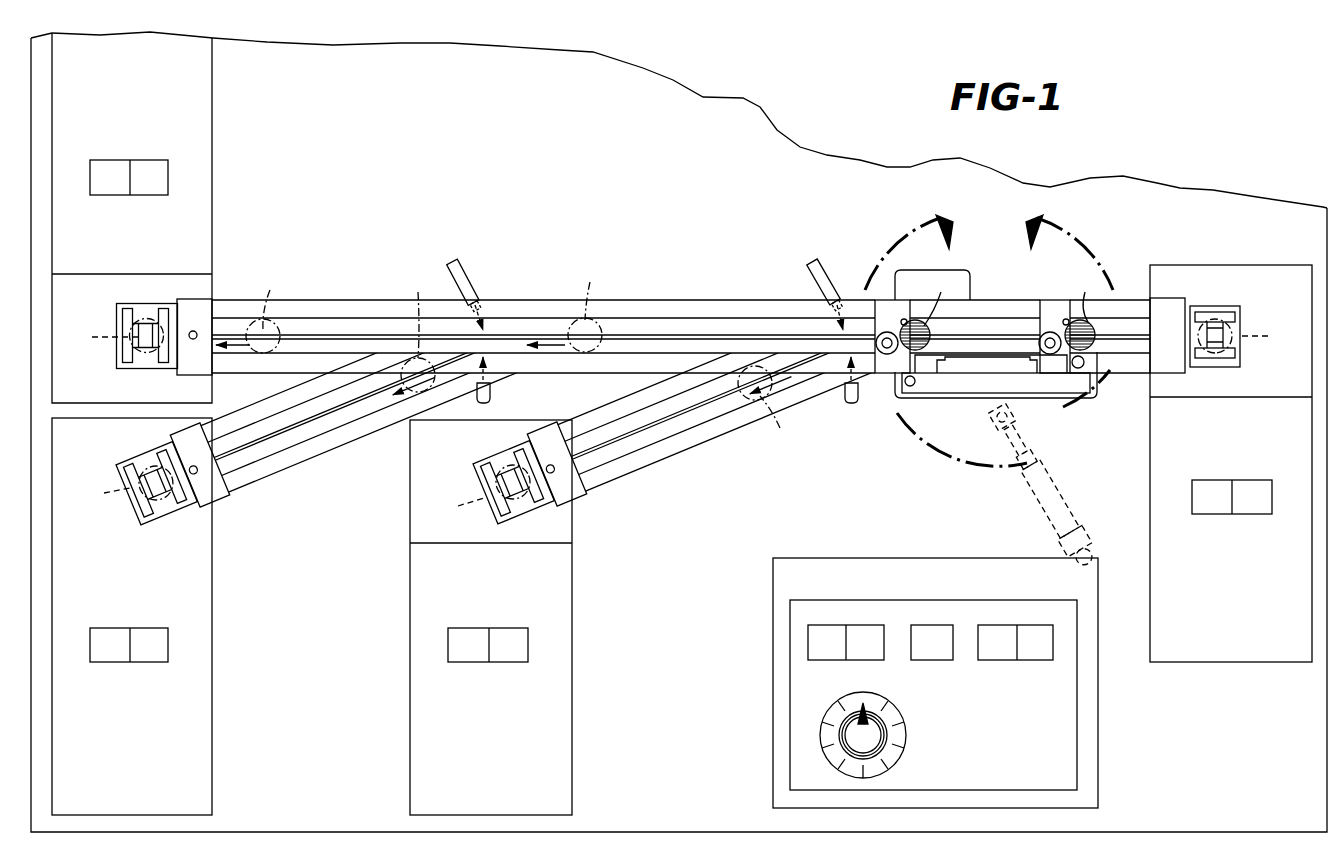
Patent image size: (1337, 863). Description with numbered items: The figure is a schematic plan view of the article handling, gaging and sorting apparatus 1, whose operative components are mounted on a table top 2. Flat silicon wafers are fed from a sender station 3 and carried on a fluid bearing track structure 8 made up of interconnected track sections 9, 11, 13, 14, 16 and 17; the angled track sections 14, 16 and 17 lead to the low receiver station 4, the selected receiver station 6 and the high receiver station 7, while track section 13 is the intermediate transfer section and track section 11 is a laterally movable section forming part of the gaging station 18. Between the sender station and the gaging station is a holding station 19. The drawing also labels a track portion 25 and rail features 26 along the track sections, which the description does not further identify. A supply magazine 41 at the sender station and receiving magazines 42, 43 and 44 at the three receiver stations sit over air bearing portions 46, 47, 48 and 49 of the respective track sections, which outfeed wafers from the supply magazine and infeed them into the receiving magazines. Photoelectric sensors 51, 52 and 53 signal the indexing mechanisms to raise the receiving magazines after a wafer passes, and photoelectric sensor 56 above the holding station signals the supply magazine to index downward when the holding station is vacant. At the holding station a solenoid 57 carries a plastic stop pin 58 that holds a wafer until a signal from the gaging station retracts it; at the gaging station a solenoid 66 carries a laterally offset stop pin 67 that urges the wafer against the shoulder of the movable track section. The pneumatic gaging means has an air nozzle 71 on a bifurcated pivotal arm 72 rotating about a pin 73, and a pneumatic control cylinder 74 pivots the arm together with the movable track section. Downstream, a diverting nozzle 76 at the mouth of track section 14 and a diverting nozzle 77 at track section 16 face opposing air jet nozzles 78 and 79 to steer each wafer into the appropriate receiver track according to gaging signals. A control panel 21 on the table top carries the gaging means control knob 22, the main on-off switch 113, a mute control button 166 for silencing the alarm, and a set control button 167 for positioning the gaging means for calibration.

The article handling, gaging and sorting apparatus 1 is at (803, 141).
The table top 2 is at (510, 176).
The sender station 3 is at (1208, 283).
The low receiver station 4 is at (570, 606).
The selected receiver station 6 is at (208, 616).
The high receiver station 7 is at (190, 183).
The fluid bearing track structure 8 is at (936, 358).
The track section 9 is at (1118, 303).
The track section 11 is at (904, 318).
The track section 13 is at (640, 322).
The track section 14 is at (702, 426).
The track section 16 is at (298, 452).
The track section 17 is at (363, 302).
The gaging station 18 is at (894, 407).
The holding station 19 is at (1067, 407).
The control panel 21 is at (935, 683).
The gaging means control knob 22 is at (880, 727).
The track section 25 is at (763, 325).
The guide rail 26 is at (305, 335).
The supply magazine 41 is at (1225, 312).
The wafer receiving magazine 42 is at (497, 479).
The wafer receiving magazine 43 is at (141, 478).
The wafer receiving magazine 44 is at (130, 324).
The air bearing portion 46 is at (1178, 360).
The air bearing portion 47 is at (530, 450).
The air bearing portion 48 is at (172, 452).
The air bearing portion 49 is at (177, 322).
The photoelectric sensor 51 is at (560, 452).
The photoelectric sensor 52 is at (196, 470).
The photoelectric sensor 53 is at (197, 332).
The photoelectric sensor 56 is at (1053, 331).
The solenoid 57 is at (1050, 362).
The stop pin 58 is at (972, 400).
The solenoid 66 is at (882, 333).
The stop pin 67 is at (874, 375).
The air nozzle 71 is at (911, 387).
The pivotal arm 72 is at (998, 386).
The pin 73 is at (1083, 369).
The pneumatic control cylinder 74 is at (1042, 508).
The nozzle 76 is at (812, 268).
The nozzle 77 is at (456, 258).
The air jet nozzle 78 is at (848, 406).
The air jet nozzle 79 is at (490, 402).
The main on-off switch 113 is at (862, 626).
The mute control button 166 is at (934, 626).
The set control button 167 is at (1032, 626).